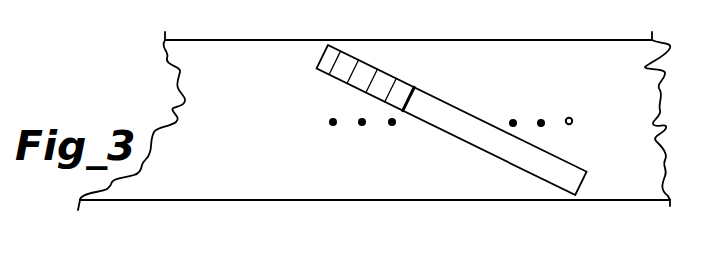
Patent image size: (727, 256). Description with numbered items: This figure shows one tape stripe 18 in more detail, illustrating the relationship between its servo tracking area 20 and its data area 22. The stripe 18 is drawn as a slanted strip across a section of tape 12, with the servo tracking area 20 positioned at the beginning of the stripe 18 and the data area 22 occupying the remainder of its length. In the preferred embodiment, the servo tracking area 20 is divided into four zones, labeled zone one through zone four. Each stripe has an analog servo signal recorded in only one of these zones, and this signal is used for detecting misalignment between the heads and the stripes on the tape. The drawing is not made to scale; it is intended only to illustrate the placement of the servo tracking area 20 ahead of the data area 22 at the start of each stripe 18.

The magnetic tape 12 is at (340, 200).
The tape stripe 18 is at (403, 134).
The servo tracking area 20 is at (343, 82).
The data area 22 is at (500, 158).